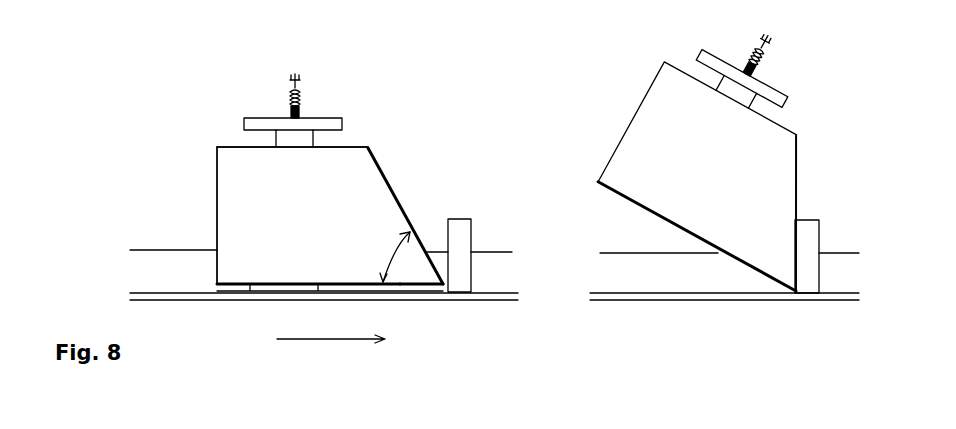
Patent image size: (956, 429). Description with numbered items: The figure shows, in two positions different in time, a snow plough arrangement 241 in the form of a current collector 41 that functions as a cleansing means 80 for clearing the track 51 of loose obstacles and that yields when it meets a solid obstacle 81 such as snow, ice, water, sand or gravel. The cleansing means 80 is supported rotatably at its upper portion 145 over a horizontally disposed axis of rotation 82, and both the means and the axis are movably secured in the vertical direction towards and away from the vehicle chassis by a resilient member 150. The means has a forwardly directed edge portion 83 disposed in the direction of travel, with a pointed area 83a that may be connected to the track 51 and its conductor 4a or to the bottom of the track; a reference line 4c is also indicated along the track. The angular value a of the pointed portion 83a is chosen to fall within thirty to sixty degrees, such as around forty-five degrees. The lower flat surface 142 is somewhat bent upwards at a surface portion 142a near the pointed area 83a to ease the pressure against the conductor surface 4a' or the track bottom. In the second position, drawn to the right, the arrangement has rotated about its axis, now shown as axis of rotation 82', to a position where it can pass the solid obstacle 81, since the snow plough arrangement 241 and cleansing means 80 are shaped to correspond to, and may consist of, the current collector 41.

The cleansing means 80 is at (206, 172).
The snow plough arrangement 241 is at (395, 190).
The current collector 41 is at (357, 173).
The upper portion 145 is at (353, 143).
The edge portion 83 is at (412, 218).
The pointed area 83a is at (423, 278).
The lower surface 142 is at (408, 285).
The surface portion 142a is at (373, 285).
The solid obstacle 81 is at (462, 217).
The track 51 is at (490, 270).
The reference line 4c is at (180, 250).
The conductor 4a is at (324, 314).
The conductor surface 4a' is at (724, 319).
The axis of rotation 82 is at (298, 99).
The axis of rotation (rotated position) 82' is at (766, 66).
The resilient member 150 is at (290, 100).
The angular value a is at (383, 282).